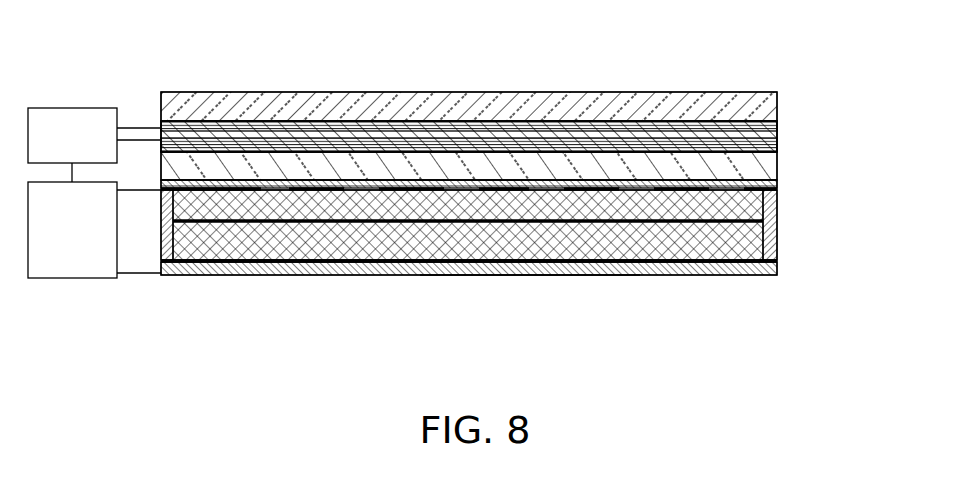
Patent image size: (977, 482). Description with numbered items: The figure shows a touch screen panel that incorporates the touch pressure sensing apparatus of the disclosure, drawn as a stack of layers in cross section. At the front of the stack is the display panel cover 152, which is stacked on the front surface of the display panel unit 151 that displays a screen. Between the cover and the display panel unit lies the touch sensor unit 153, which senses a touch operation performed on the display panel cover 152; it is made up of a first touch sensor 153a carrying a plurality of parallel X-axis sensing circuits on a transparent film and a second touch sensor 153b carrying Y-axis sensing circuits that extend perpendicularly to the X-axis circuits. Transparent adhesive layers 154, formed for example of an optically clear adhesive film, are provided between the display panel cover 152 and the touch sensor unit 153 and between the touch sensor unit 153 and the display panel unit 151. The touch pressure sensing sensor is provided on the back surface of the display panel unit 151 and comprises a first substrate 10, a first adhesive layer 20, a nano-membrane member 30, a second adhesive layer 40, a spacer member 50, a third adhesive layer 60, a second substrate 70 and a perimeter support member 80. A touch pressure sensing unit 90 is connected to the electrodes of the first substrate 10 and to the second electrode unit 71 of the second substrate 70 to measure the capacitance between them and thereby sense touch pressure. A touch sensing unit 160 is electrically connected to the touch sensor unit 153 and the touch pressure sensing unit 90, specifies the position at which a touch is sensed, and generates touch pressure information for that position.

The first substrate 10 is at (777, 185).
The first adhesive layer 20 is at (777, 190).
The nano-membrane member 30 is at (660, 277).
The second adhesive layer 40 is at (777, 216).
The spacer member 50 is at (603, 277).
The third adhesive layer 60 is at (777, 262).
The second substrate 70 is at (527, 277).
The second electrode unit 71 is at (460, 277).
The perimeter support member 80 is at (777, 238).
The touch pressure sensing unit 90 is at (72, 278).
The display panel unit 151 is at (777, 166).
The display panel cover 152 is at (755, 92).
The touch sensor unit 153 is at (877, 55).
The first touch sensor 153a is at (777, 126).
The second touch sensor 153b is at (777, 145).
The transparent adhesive layer 154 is at (523, 183).
The touch sensing unit 160 is at (73, 108).